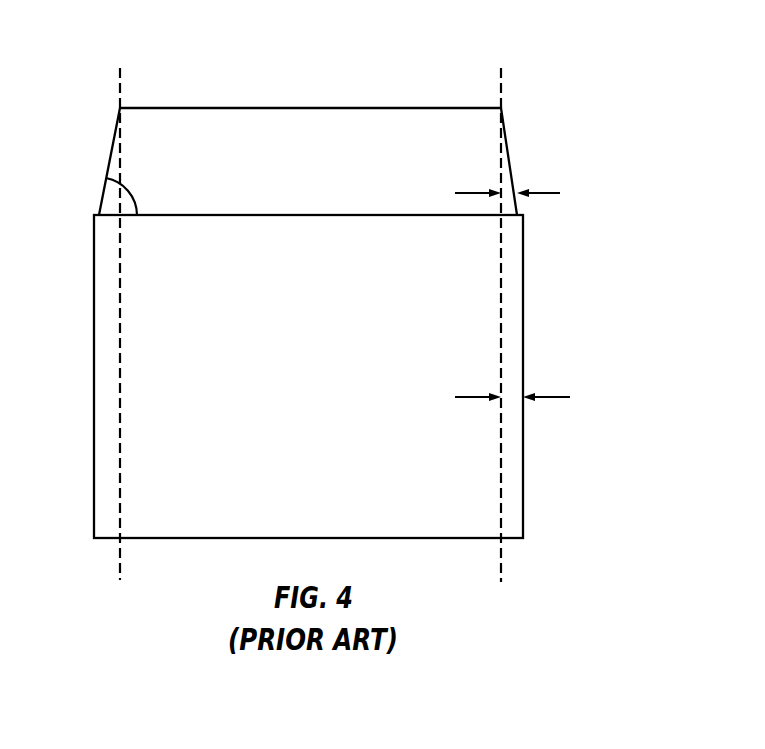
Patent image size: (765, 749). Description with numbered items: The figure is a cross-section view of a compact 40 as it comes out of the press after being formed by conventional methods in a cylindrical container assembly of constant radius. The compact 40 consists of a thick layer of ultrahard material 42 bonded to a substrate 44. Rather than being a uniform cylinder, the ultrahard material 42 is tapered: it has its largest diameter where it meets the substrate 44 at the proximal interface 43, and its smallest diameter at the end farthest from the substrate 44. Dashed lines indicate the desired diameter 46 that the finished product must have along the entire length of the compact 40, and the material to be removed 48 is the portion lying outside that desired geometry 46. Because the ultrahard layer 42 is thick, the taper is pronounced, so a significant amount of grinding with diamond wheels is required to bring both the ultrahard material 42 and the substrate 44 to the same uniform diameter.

The compact 40 is at (460, 46).
The ultrahard material layer 42 is at (326, 173).
The proximal interface 43 is at (107, 177).
The substrate 44 is at (326, 388).
The desired diameter 46 is at (503, 96).
The material to be removed 48 is at (539, 193).